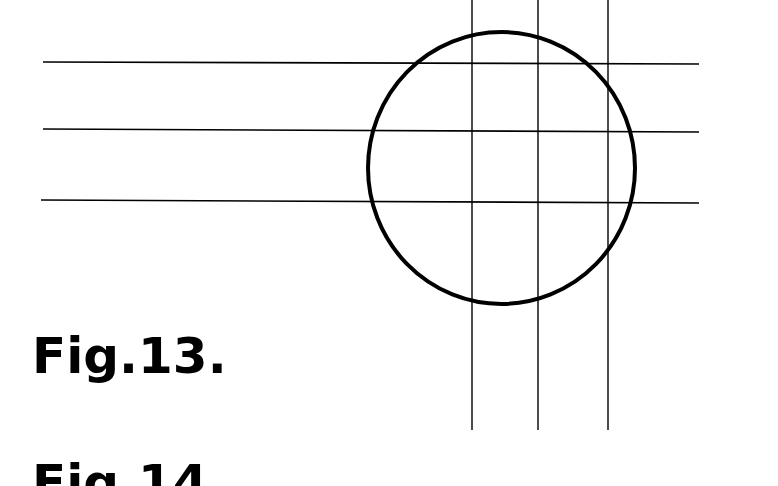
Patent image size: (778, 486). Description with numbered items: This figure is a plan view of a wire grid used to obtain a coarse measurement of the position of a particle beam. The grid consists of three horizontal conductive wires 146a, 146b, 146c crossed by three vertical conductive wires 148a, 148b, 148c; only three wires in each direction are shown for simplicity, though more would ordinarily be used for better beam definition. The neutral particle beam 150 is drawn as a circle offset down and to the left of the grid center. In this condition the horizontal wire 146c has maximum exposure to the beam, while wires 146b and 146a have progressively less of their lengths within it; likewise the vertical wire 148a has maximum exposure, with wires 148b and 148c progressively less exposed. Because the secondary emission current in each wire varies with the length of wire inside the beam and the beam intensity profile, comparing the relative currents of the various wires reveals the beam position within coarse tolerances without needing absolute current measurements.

The horizontal conductive wire 146a is at (240, 61).
The horizontal conductive wire 146b is at (168, 129).
The horizontal conductive wire 146c is at (155, 200).
The vertical conductive wire 148a is at (472, 382).
The vertical conductive wire 148b is at (538, 410).
The vertical conductive wire 148c is at (608, 385).
The neutral particle beam 150 is at (390, 247).